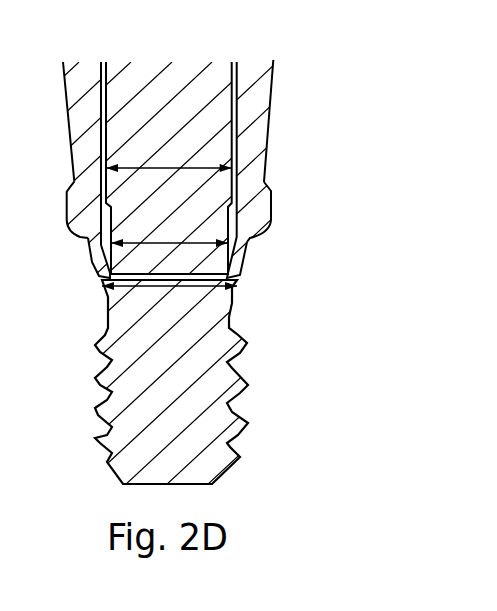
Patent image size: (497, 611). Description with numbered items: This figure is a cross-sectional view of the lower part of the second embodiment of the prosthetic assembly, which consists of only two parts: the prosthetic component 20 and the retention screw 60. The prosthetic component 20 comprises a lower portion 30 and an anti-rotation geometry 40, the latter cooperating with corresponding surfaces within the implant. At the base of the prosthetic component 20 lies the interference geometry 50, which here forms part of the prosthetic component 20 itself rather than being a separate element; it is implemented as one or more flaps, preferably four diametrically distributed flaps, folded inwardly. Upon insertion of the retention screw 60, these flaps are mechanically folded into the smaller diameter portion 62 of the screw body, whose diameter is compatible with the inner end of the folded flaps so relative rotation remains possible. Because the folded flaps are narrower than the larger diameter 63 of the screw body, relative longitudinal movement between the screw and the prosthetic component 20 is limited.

The prosthetic component 20 is at (285, 58).
The lower portion 30 is at (265, 122).
The anti-rotation geometry 40 is at (265, 205).
The interference geometry 50 is at (243, 262).
The retention screw 60 is at (192, 423).
The smaller diameter portion 62 is at (169, 233).
The larger diameter 63 is at (169, 229).